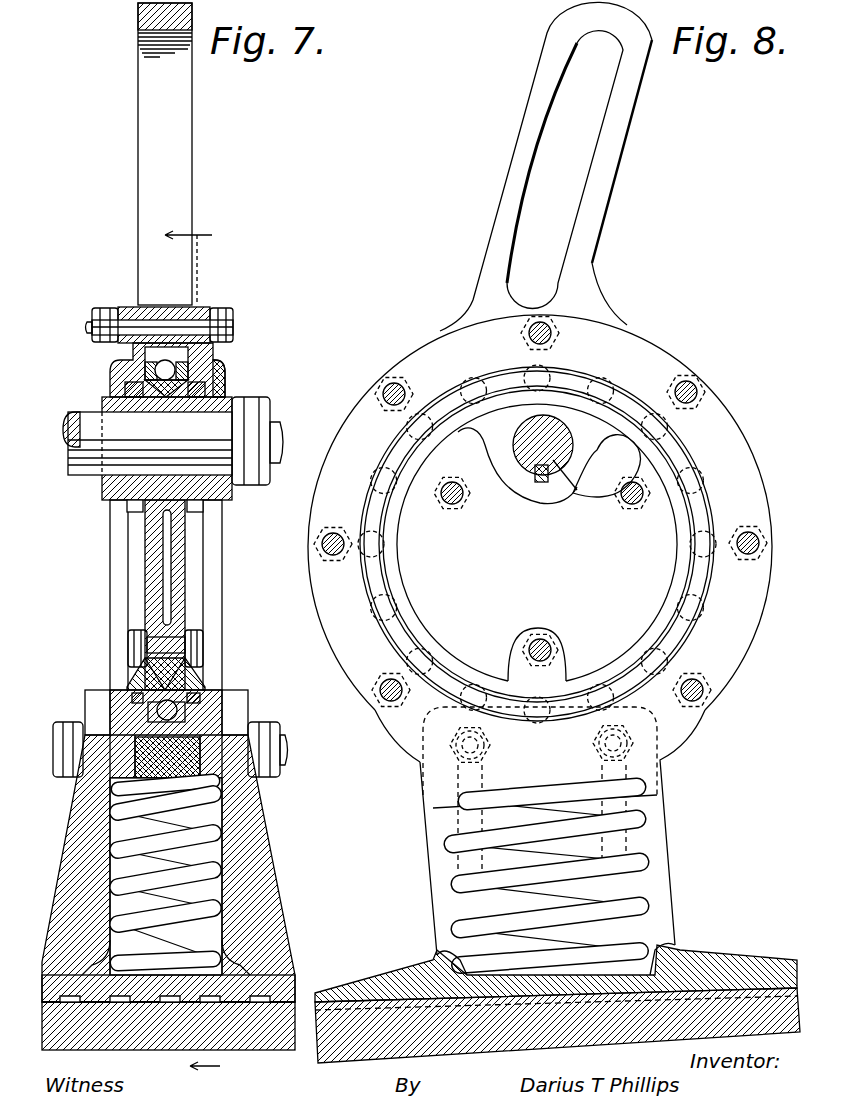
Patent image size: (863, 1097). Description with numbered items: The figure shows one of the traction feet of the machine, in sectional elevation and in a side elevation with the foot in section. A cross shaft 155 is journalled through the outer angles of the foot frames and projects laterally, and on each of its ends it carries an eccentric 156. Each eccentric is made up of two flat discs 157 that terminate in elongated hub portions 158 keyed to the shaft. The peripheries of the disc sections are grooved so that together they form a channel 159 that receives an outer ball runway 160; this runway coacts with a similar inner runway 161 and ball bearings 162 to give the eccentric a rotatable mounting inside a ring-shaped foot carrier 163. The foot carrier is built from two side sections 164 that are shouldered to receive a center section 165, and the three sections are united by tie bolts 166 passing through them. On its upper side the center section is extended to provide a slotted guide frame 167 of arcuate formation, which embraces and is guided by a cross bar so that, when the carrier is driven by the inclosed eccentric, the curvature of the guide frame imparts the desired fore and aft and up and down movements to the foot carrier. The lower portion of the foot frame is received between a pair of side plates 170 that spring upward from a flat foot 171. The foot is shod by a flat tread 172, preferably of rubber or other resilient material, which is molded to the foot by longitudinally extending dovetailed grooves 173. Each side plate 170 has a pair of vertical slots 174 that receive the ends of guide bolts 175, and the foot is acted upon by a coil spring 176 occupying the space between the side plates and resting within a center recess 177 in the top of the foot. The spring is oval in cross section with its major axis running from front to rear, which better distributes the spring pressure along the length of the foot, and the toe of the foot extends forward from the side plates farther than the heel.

In FIG. 7, the cross shaft 155 is at (210, 392).
In FIG. 8, the cross shaft 155 is at (548, 504).
In FIG. 7, the eccentric 156 is at (190, 580).
In FIG. 8, the eccentric 156 is at (537, 542).
In FIG. 7, the flat disc 157 is at (165, 560).
In FIG. 8, the flat disc 157 is at (660, 590).
In FIG. 7, the hub portion 158 is at (118, 508).
In FIG. 8, the hub portion 158 is at (593, 440).
In FIG. 7, the channel 159 is at (195, 675).
In FIG. 7, the outer ball runway 160 is at (112, 366).
In FIG. 7, the inner runway 161 is at (145, 385).
In FIG. 8, the inner runway 161 is at (378, 558).
In FIG. 7, the ball bearings 162 is at (102, 407).
In FIG. 7, the foot carrier 163 is at (225, 368).
In FIG. 8, the foot carrier 163 is at (736, 452).
In FIG. 7, the side section 164 is at (105, 340).
In FIG. 8, the side section 164 is at (656, 372).
In FIG. 7, the center section 165 is at (200, 318).
In FIG. 7, the tie bolt 166 is at (160, 320).
In FIG. 8, the tie bolt 166 is at (562, 331).
In FIG. 7, the slotted guide frame 167 is at (190, 165).
In FIG. 8, the slotted guide frame 167 is at (600, 200).
In FIG. 7, the side plate 170 is at (250, 885).
In FIG. 8, the side plate 170 is at (668, 880).
In FIG. 7, the foot 171 is at (215, 985).
In FIG. 8, the foot 171 is at (395, 975).
In FIG. 7, the tread 172 is at (265, 1045).
In FIG. 8, the tread 172 is at (735, 1000).
In FIG. 7, the dovetailed groove 173 is at (210, 1005).
In FIG. 8, the vertical slot 174 is at (468, 822).
In FIG. 7, the guide bolt 175 is at (284, 750).
In FIG. 8, the guide bolt 175 is at (400, 745).
In FIG. 7, the coil spring 176 is at (215, 837).
In FIG. 8, the coil spring 176 is at (455, 890).
In FIG. 7, the center recess 177 is at (225, 960).
In FIG. 8, the center recess 177 is at (680, 958).